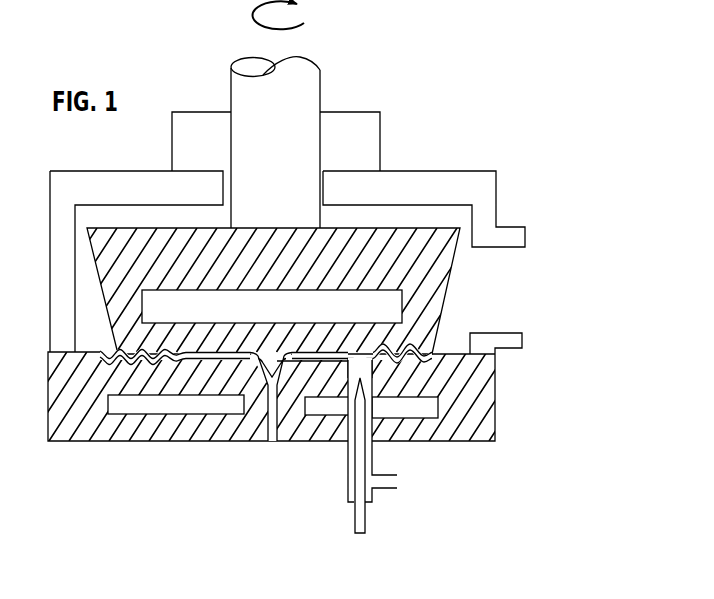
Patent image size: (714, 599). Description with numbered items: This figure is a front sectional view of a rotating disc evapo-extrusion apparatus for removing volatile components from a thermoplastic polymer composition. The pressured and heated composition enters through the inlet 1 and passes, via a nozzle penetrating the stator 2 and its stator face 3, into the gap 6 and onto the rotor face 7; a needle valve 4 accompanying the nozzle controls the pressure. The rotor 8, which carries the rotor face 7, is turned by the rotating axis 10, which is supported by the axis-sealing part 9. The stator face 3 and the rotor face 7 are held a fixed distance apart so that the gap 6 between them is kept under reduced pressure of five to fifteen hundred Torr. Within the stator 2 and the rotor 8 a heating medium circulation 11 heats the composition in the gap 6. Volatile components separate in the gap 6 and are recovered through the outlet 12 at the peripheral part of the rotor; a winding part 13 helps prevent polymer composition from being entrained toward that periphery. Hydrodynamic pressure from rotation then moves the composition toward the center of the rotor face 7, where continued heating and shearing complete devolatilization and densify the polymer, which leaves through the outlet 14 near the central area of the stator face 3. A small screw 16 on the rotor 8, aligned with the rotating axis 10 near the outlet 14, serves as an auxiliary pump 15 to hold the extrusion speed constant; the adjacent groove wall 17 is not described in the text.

The inlet 1 is at (400, 481).
The stator 2 is at (478, 411).
The stator face 3 is at (325, 370).
The needle valve 4 is at (360, 479).
The gap 6 is at (296, 367).
The rotor face 7 is at (335, 346).
The rotor 8 is at (432, 258).
The axis-sealing part 9 is at (363, 143).
The rotating axis 10 is at (291, 108).
The heating medium circulation 11 is at (482, 457).
The outlet 12 is at (512, 283).
The winding part 13 is at (147, 346).
The outlet 14 is at (270, 443).
The auxiliary pump 15 is at (217, 382).
The small screw 16 is at (266, 356).
The groove wall 17 is at (256, 367).